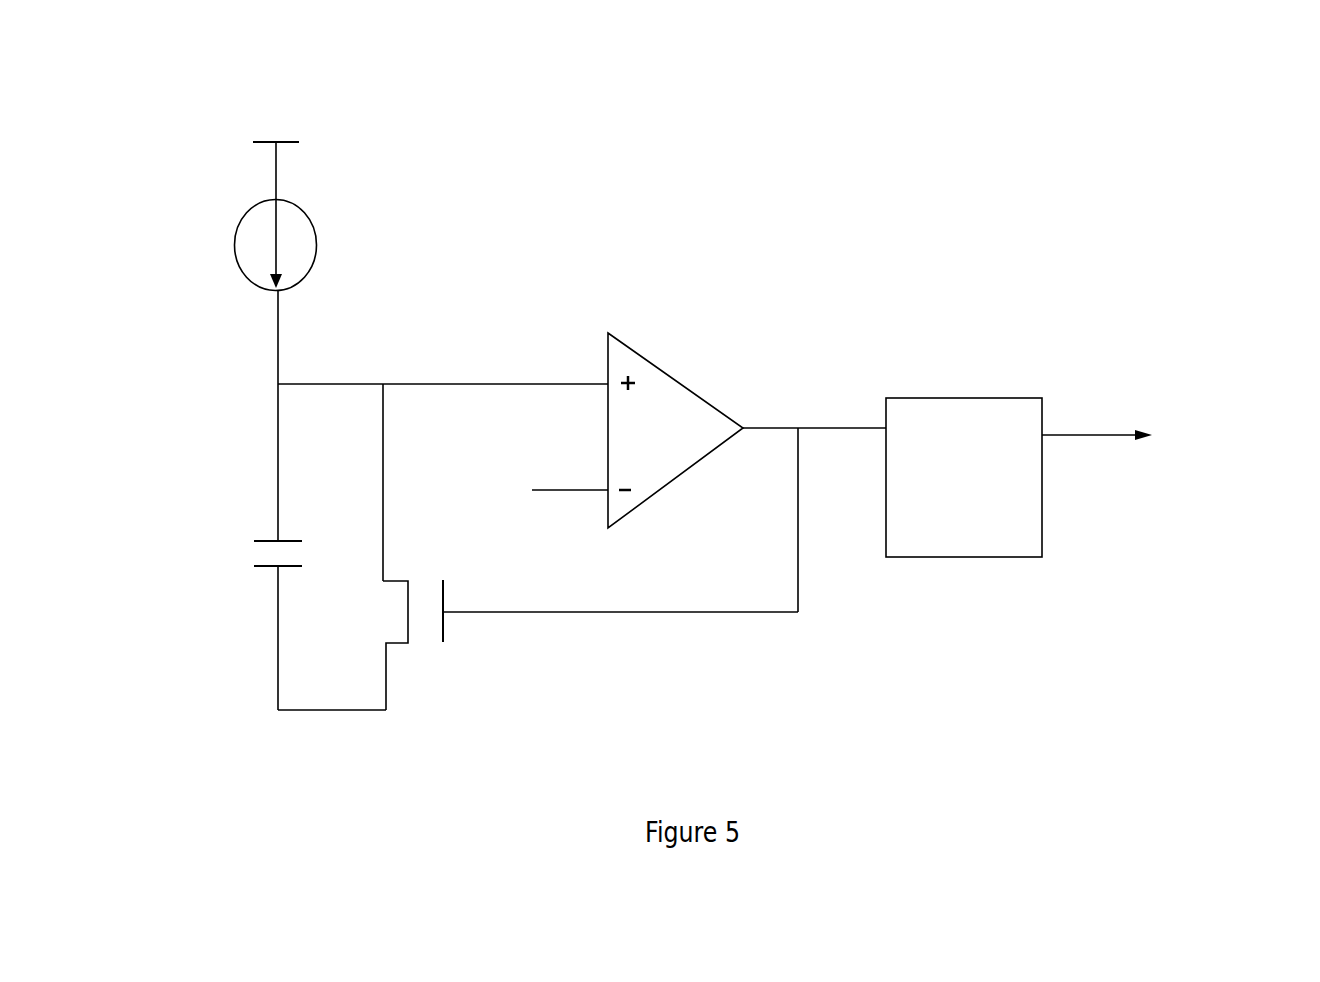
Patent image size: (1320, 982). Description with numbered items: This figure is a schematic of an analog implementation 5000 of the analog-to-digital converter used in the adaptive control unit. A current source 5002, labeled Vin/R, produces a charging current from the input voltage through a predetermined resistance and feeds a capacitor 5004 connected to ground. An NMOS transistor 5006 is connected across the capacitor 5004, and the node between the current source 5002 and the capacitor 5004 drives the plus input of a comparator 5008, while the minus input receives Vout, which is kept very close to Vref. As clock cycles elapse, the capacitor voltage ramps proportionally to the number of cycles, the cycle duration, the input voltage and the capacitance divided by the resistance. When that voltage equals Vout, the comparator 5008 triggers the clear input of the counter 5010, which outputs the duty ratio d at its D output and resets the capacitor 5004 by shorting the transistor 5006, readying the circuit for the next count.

The analog-to-digital conversion circuit 5000 is at (1176, 112).
The current source 5002 is at (313, 225).
The capacitor 5004 is at (255, 555).
The NMOS transistor 5006 is at (445, 627).
The comparator 5008 is at (632, 348).
The counter 5010 is at (910, 397).